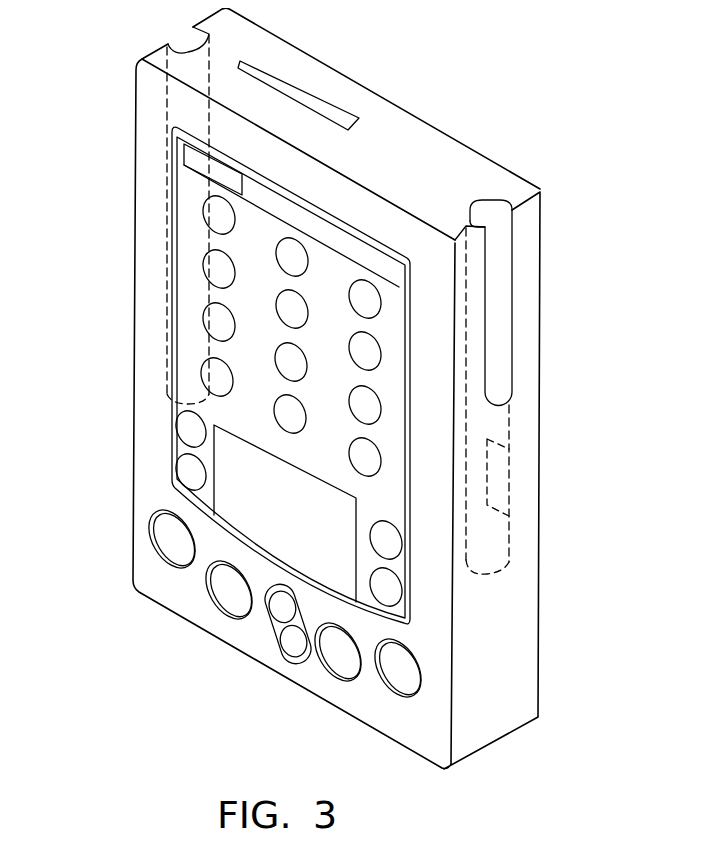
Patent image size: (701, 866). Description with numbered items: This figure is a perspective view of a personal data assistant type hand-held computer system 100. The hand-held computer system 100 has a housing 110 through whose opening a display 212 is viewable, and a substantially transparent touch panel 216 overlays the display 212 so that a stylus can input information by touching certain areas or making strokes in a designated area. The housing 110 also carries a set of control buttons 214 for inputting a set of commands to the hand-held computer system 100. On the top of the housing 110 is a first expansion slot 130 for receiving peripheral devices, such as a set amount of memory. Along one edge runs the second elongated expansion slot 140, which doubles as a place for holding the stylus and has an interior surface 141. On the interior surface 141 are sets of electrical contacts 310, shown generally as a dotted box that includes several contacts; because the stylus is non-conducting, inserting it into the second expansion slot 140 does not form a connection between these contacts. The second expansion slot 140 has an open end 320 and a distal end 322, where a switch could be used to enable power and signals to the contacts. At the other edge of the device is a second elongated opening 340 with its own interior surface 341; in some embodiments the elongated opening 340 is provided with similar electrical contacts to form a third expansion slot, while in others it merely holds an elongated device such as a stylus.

The hand-held computer system 100 is at (389, 123).
The housing 110 is at (332, 683).
The first expansion slot 130 is at (288, 83).
The second expansion slot 140 is at (495, 208).
The interior surface 141 is at (500, 535).
The display 212 is at (237, 290).
The control buttons 214 is at (225, 588).
The touch panel 216 is at (189, 426).
The electrical contacts 310 is at (495, 472).
The open end 320 is at (473, 200).
The distal end 322 is at (490, 565).
The second elongated opening 340 is at (183, 47).
The interior surface 341 is at (178, 97).